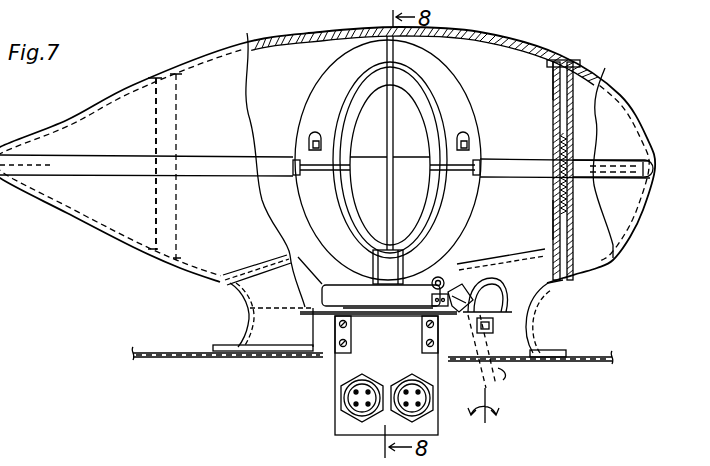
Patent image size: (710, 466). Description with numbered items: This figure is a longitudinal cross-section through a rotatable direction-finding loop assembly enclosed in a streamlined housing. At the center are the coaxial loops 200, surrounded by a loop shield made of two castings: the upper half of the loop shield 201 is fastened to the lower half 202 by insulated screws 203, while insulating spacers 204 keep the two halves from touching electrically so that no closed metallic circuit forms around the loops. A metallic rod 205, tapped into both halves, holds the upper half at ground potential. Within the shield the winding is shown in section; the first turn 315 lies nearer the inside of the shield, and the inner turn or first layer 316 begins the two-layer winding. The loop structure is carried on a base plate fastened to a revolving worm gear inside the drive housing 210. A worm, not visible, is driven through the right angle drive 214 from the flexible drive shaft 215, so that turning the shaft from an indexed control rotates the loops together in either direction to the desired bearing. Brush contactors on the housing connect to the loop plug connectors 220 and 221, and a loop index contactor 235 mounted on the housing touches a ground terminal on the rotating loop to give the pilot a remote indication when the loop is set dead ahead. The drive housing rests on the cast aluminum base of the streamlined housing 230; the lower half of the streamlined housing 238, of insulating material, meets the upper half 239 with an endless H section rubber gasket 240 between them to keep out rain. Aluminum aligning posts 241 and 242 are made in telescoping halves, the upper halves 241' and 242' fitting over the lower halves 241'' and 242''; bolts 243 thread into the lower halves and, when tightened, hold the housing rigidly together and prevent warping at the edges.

The coaxial loops 200 is at (432, 64).
The upper half of the loop shield 201 is at (366, 72).
The lower half of the loop shield 202 is at (440, 190).
The insulated screws 203 is at (470, 135).
The insulating spacers 204 is at (309, 157).
The metallic rod 205 is at (387, 208).
The housing 210 is at (320, 280).
The 90° angle drive 214 is at (492, 290).
The flexible drive shaft 215 is at (488, 383).
The loop plug connector 220 is at (417, 420).
The loop plug connector 221 is at (360, 420).
The streamlined housing 230 is at (247, 314).
The loop index contactor 235 is at (447, 272).
The lower half of the streamlined housing 238 is at (574, 265).
The upper half of the streamlined housing 239 is at (474, 37).
The endless H section rubber gasket 240 is at (200, 177).
The aluminum aligning post 241 is at (613, 184).
The upper half of aligning post 241' is at (518, 83).
The lower half of aligning post 241'' is at (525, 220).
The aluminum aligning post 242 is at (196, 168).
The upper half of aligning post 242' is at (125, 164).
The lower half of aligning post 242'' is at (124, 164).
The bolts 243 is at (560, 62).
The first turn of the loop winding 315 is at (432, 143).
The inner turn or first layer of the winding 316 is at (345, 143).